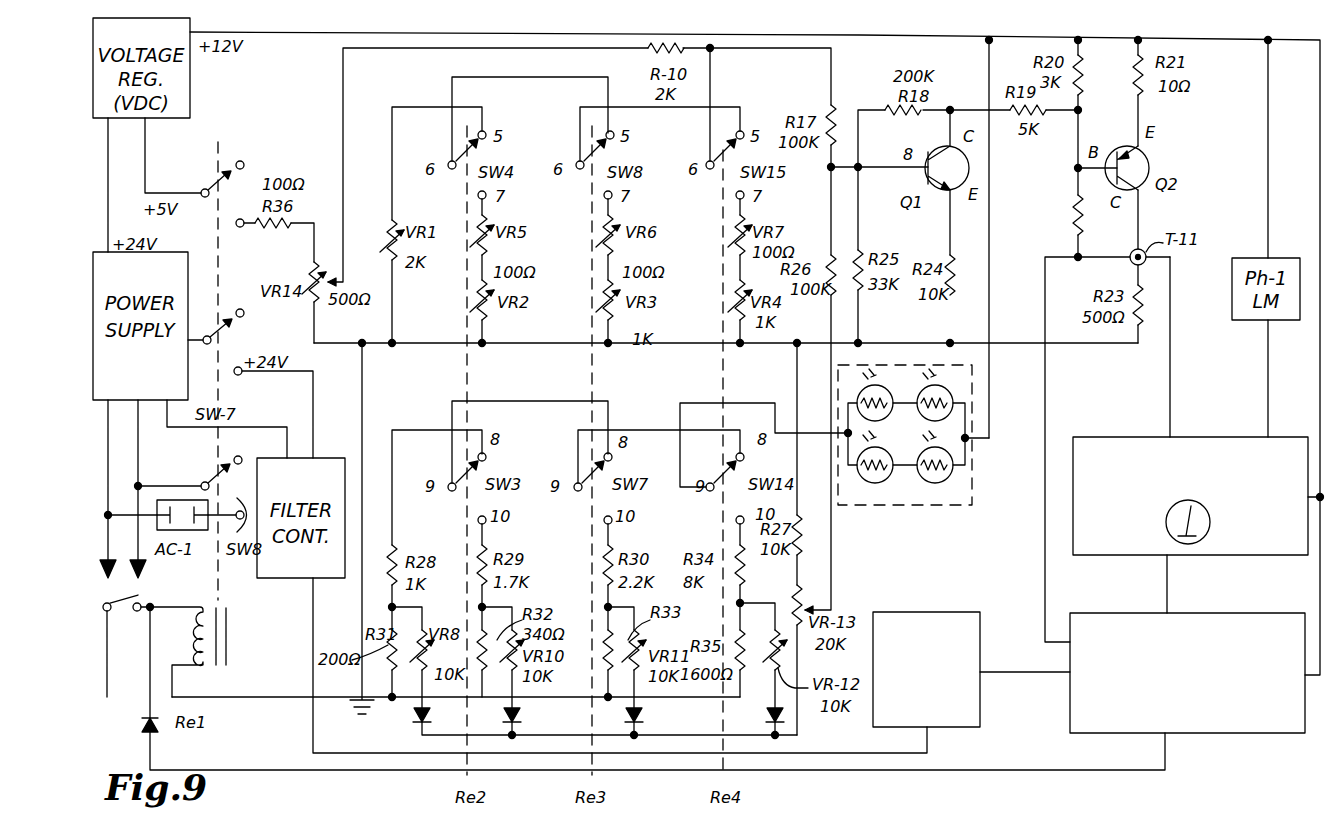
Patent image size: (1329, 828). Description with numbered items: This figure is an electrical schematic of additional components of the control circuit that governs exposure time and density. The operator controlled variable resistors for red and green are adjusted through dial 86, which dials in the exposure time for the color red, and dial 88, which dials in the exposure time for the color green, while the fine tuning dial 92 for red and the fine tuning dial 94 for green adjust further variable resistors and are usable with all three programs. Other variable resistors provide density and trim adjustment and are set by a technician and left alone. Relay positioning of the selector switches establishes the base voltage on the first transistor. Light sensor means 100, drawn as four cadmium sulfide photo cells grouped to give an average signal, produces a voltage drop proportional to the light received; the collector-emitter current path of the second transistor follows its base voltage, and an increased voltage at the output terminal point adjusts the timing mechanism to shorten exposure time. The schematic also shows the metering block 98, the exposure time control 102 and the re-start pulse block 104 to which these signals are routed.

The dial 86 is at (500, 306).
The dial 88 is at (627, 306).
The fine tuning dial 92 is at (499, 238).
The fine tuning dial 94 is at (627, 238).
The metering circuit 98 is at (1190, 496).
The light sensor means 100 is at (870, 488).
The exposure time control 102 is at (1187, 673).
The re-start pulse circuit 104 is at (926, 669).